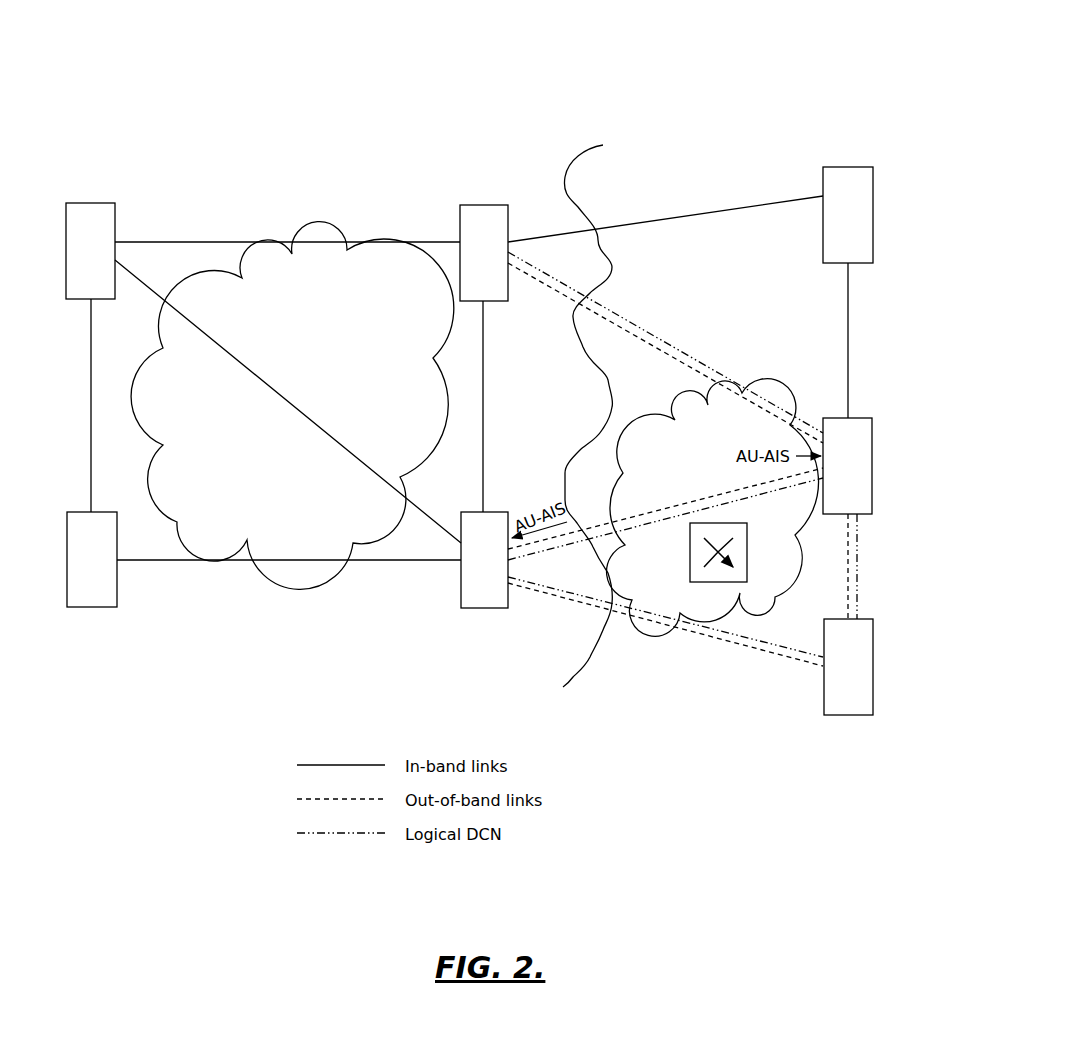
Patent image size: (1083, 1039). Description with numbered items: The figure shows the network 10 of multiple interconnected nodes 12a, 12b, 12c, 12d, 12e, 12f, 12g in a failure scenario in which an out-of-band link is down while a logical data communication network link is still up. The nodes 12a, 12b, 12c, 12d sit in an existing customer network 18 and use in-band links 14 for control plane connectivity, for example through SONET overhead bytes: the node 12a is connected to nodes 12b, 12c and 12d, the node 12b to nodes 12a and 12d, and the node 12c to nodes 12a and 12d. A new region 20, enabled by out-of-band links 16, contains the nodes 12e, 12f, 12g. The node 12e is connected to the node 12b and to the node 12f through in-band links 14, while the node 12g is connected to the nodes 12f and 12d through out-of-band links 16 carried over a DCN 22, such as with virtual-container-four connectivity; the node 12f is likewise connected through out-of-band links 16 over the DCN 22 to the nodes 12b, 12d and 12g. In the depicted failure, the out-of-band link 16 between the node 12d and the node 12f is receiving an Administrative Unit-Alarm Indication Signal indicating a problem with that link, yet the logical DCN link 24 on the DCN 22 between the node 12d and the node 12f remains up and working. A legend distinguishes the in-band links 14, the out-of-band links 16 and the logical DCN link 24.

The network 10 is at (446, 57).
The node 12a is at (88, 203).
The node 12b is at (485, 205).
The node 12c is at (100, 608).
The node 12d is at (482, 608).
The node 12e is at (840, 167).
The node 12f is at (845, 418).
The node 12g is at (850, 716).
The in-band link 14 is at (742, 208).
The out-of-band link 16 is at (637, 336).
The existing customer network 18 is at (378, 222).
The new region 20 is at (703, 115).
The data communication network 22 is at (700, 650).
The logical DCN link 24 is at (342, 853).